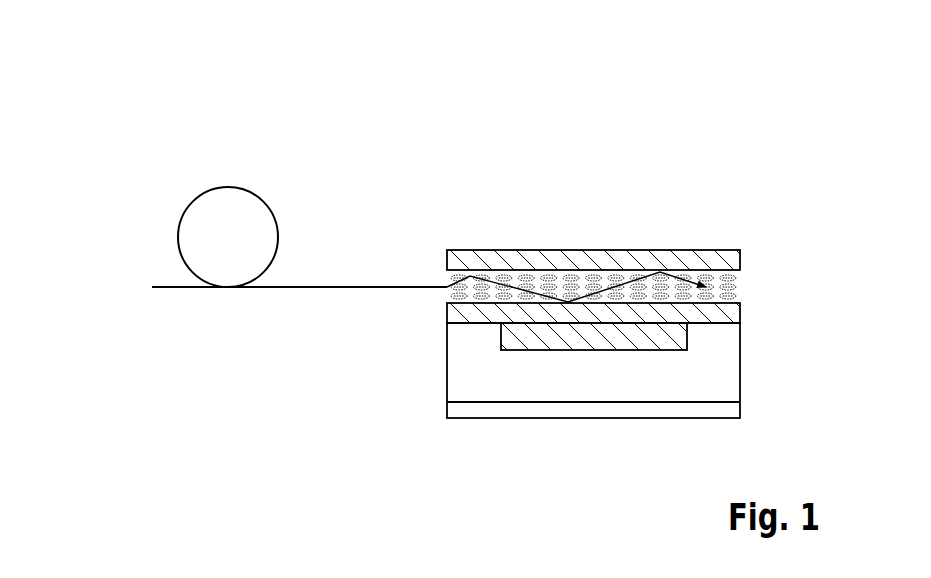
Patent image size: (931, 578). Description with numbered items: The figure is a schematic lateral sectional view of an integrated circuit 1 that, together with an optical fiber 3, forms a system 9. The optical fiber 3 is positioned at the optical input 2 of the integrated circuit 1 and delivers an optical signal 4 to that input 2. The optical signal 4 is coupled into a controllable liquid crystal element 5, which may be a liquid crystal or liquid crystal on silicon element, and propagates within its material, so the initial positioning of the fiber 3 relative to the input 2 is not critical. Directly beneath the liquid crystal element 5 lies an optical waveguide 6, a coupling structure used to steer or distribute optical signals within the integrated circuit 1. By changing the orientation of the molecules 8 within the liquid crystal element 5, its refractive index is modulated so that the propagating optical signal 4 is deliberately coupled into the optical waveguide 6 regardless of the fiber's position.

The integrated circuit 1 is at (647, 418).
The optical input 2 is at (442, 276).
The optical fiber 3 is at (183, 220).
The optical signal 4 is at (516, 283).
The controllable liquid crystal element 5 is at (712, 242).
The optical waveguide 6 is at (542, 342).
The molecules 8 is at (592, 275).
The system 9 is at (352, 122).